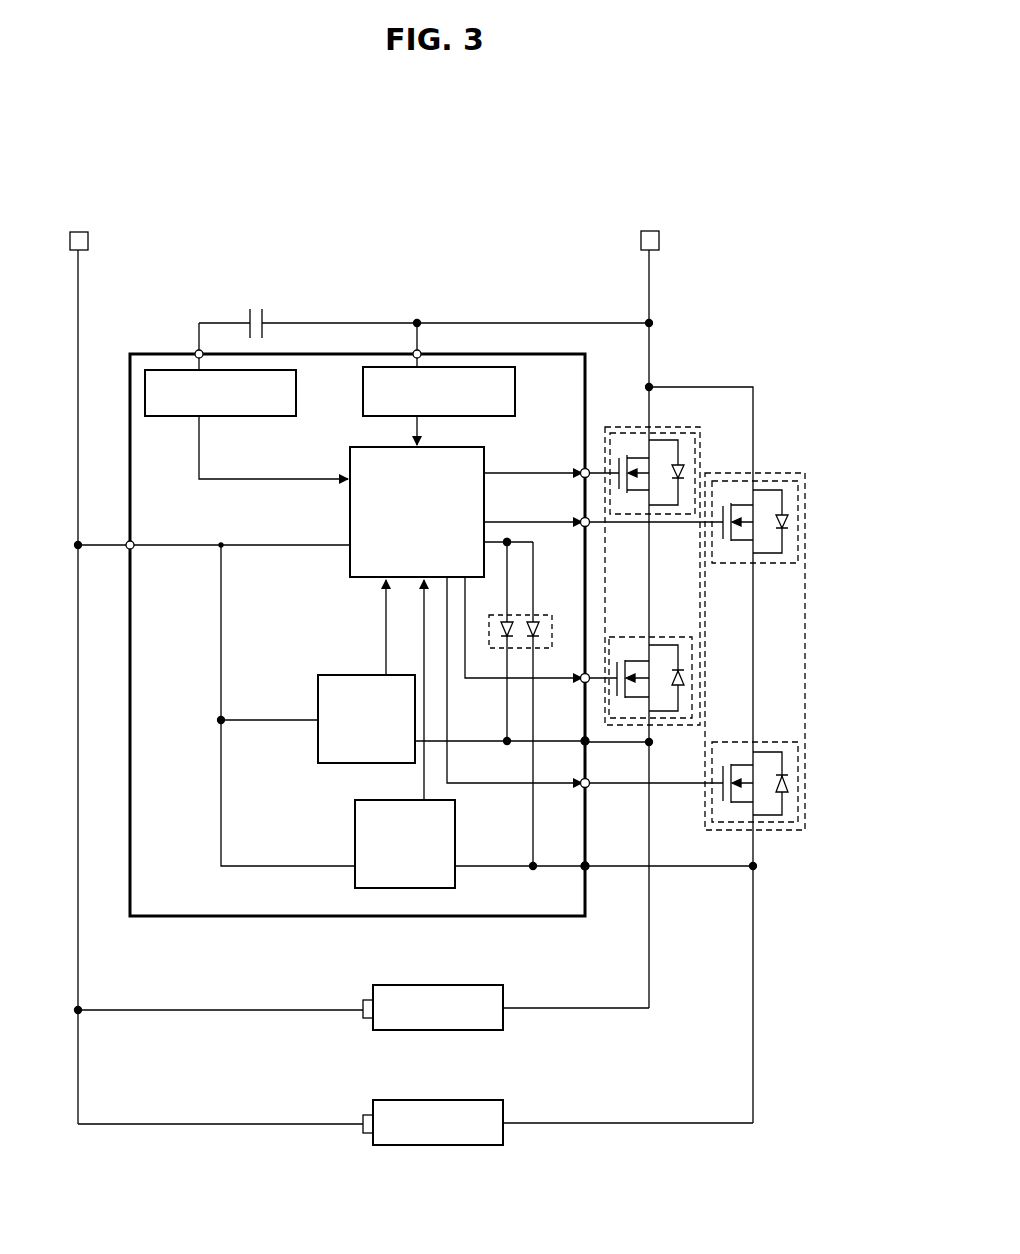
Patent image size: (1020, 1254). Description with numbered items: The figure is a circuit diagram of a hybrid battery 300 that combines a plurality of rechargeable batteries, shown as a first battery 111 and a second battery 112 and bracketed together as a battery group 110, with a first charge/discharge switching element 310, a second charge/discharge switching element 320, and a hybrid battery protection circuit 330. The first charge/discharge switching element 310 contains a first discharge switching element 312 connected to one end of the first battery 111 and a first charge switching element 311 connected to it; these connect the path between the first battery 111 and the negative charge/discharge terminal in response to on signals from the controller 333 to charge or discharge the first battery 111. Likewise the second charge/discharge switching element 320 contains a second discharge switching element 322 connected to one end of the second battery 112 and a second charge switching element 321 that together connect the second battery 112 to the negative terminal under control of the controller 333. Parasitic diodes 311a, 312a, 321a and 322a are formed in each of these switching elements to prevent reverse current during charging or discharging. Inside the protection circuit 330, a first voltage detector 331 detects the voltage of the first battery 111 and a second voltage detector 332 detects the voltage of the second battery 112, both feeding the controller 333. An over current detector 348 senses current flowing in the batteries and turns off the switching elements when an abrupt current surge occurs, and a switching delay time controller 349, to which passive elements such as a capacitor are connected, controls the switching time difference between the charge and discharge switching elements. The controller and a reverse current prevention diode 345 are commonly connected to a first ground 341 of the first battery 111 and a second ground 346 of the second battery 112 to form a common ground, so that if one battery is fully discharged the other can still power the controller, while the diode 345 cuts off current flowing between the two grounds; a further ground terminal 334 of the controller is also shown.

The hybrid battery 300 is at (832, 203).
The hybrid battery protection circuit 330 is at (465, 350).
The switching delay time controller 349 is at (296, 394).
The over current detector 348 is at (515, 394).
The GND3 terminal 334 is at (508, 538).
The controller 333 is at (348, 509).
The second voltage detector 332 is at (344, 675).
The first voltage detector 331 is at (395, 889).
The reverse current prevention diode 345 is at (552, 628).
The second ground 346 is at (583, 739).
The first ground 341 is at (583, 870).
The second charge/discharge switching element 320 is at (685, 423).
The second charge switching element 321 is at (633, 427).
The parasitic diode 321a is at (684, 470).
The second discharge switching element 322 is at (668, 636).
The parasitic diode 322a is at (686, 686).
The first charge/discharge switching element 310 is at (808, 624).
The first charge switching element 311 is at (806, 494).
The parasitic diode 311a is at (790, 530).
The first discharge switching element 312 is at (800, 756).
The parasitic diode 312a is at (792, 792).
The second battery 112 is at (505, 1025).
The first battery 111 is at (505, 1112).
The battery 110 is at (415, 1065).